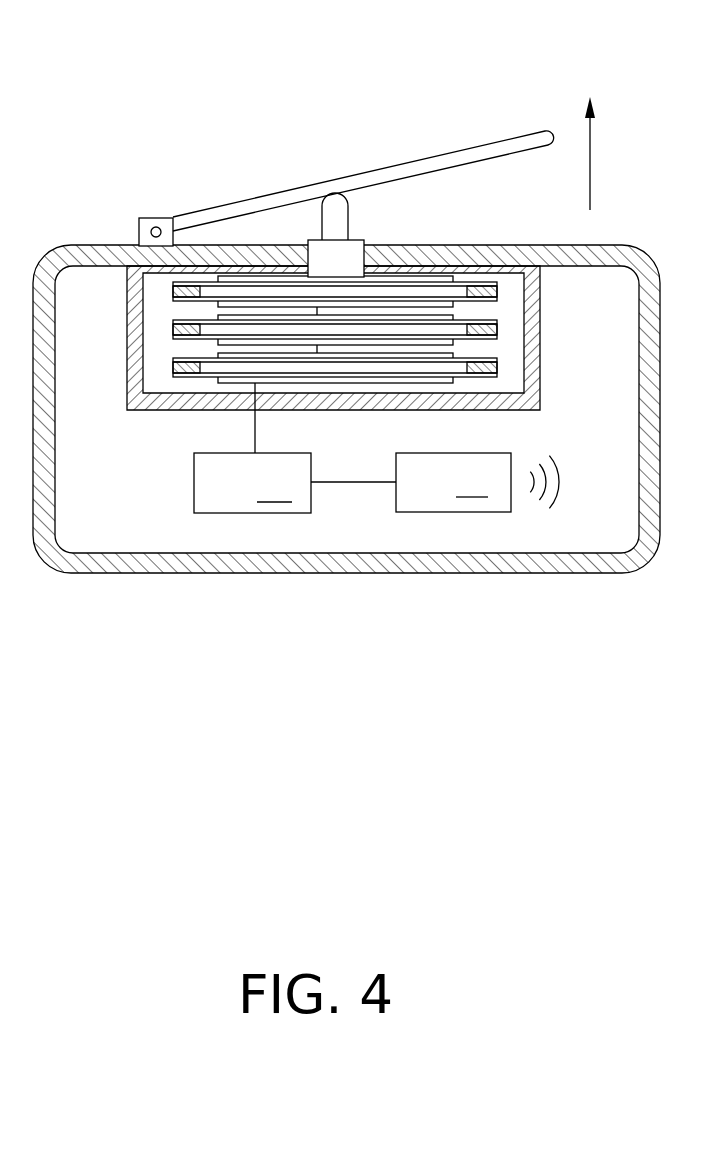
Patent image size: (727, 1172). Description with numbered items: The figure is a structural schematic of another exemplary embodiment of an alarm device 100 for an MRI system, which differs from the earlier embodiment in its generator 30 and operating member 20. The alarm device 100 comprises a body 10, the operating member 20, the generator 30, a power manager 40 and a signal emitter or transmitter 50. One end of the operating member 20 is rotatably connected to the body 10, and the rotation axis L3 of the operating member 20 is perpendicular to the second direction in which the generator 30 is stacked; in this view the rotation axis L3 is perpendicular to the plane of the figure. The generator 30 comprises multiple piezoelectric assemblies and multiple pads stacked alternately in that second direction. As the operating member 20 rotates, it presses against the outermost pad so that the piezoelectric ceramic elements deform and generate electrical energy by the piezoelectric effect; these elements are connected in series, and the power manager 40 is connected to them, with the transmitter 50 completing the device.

The alarm device 100 is at (346, 287).
The body 10 is at (90, 254).
The operating member 20 is at (452, 160).
The rotation axis L3 is at (155, 230).
The generator 30 is at (163, 378).
The power manager 40 is at (252, 483).
The signal emitter (transmitter) 50 is at (453, 482).